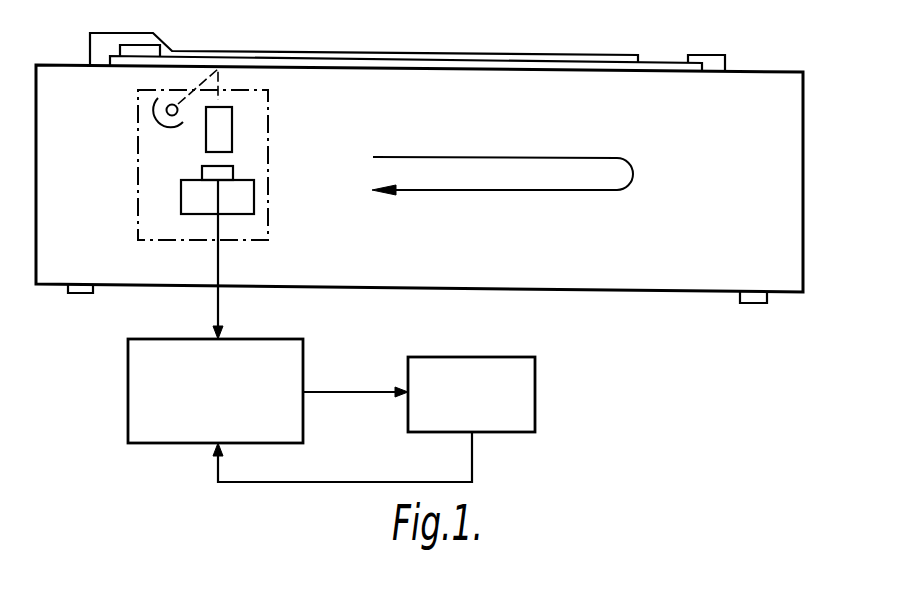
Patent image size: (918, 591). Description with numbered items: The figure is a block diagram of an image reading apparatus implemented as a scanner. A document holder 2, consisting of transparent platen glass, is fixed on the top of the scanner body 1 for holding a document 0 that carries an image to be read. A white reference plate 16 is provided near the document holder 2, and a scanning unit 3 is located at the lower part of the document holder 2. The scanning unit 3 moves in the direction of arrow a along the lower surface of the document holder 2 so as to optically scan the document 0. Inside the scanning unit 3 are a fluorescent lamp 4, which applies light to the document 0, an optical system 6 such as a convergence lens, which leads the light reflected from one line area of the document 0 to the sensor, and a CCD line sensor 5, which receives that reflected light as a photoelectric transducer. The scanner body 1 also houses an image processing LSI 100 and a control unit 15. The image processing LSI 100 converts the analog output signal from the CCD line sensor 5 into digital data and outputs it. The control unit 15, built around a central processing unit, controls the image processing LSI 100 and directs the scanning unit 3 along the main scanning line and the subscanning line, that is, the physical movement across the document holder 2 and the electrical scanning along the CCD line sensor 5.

The scanner body 1 is at (774, 138).
The document holder 2 is at (536, 70).
The document 0 is at (478, 53).
The white reference plate 16 is at (150, 45).
The scanning unit 3 is at (136, 218).
The fluorescent lamp 4 is at (160, 114).
The optical system 6 is at (232, 136).
The CCD line sensor 5 is at (233, 172).
The arrow a is at (502, 160).
The image processing LSI 100 is at (245, 338).
The control unit 15 is at (487, 357).